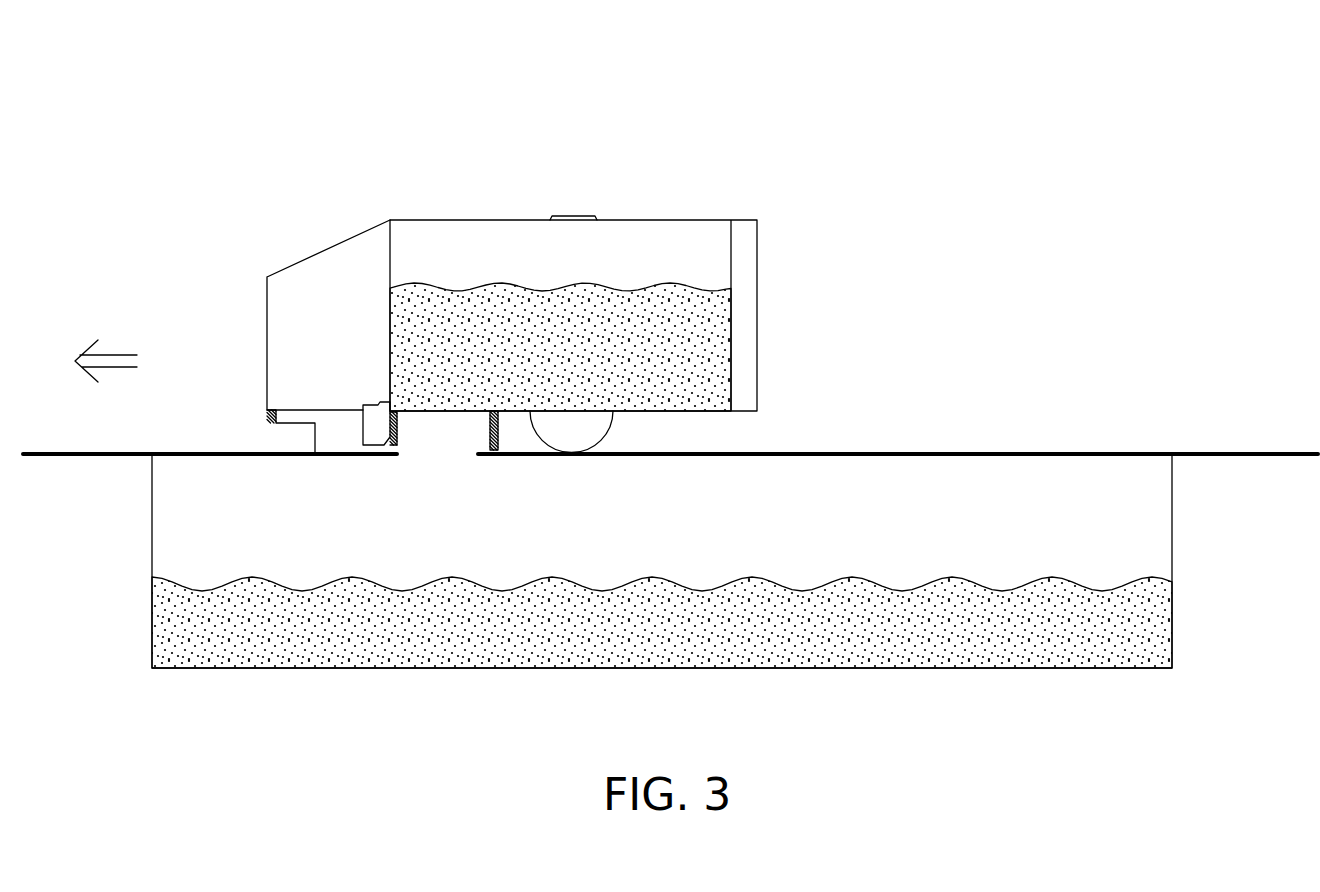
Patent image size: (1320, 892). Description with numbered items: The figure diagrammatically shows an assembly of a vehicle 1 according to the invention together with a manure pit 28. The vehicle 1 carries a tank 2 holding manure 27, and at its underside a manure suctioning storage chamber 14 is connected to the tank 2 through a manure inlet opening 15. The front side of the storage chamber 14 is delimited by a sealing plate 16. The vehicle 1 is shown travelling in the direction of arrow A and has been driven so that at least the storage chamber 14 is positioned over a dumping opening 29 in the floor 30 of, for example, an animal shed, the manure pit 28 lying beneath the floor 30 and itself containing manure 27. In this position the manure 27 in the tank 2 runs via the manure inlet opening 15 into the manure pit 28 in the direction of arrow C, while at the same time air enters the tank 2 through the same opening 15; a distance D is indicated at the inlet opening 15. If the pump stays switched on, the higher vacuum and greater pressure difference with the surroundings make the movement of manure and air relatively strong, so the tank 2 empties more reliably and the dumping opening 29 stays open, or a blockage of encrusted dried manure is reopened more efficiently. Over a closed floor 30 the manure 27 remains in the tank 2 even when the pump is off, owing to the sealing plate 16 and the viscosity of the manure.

The vehicle 1 is at (777, 268).
The tank 2 is at (652, 220).
The manure suctioning storage chamber 14 is at (445, 448).
The manure inlet opening 15 is at (477, 410).
The sealing plate 16 is at (373, 428).
The manure 27 is at (663, 364).
The manure pit 28 is at (1172, 542).
The dumping opening 29 is at (413, 455).
The floor 30 is at (1002, 453).
The direction of travel A is at (130, 343).
The arrow C is at (469, 400).
The distance D is at (462, 415).